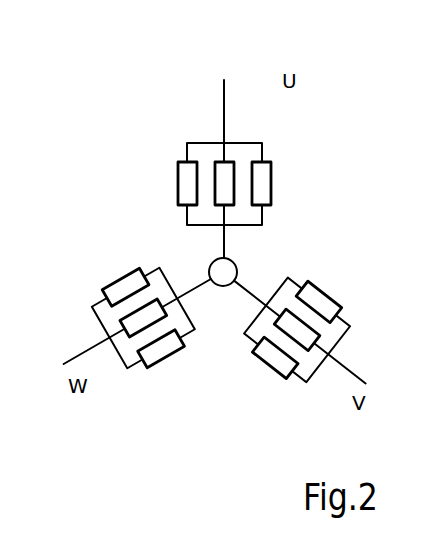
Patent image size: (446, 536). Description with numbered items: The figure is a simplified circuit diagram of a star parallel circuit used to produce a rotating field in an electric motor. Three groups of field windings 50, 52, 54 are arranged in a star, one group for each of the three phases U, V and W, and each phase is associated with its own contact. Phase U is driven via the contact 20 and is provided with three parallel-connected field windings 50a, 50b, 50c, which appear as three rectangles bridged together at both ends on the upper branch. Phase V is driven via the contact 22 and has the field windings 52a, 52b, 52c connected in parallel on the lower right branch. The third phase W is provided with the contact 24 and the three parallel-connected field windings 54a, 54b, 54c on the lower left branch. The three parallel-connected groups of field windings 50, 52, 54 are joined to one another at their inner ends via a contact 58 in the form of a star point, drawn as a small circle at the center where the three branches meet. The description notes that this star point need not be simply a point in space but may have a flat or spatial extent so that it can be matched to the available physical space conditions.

The contact 20 is at (222, 125).
The contact 22 is at (343, 366).
The contact 24 is at (90, 350).
The field windings 50 is at (270, 211).
The field winding 50a is at (183, 180).
The field winding 50b is at (222, 197).
The field winding 50c is at (265, 178).
The field windings 52 is at (321, 375).
The field winding 52a is at (313, 298).
The field winding 52b is at (308, 335).
The field winding 52c is at (293, 368).
The field windings 54 is at (152, 370).
The field winding 54a is at (187, 342).
The field winding 54b is at (133, 331).
The field winding 54c is at (120, 285).
The contact 58 is at (235, 262).